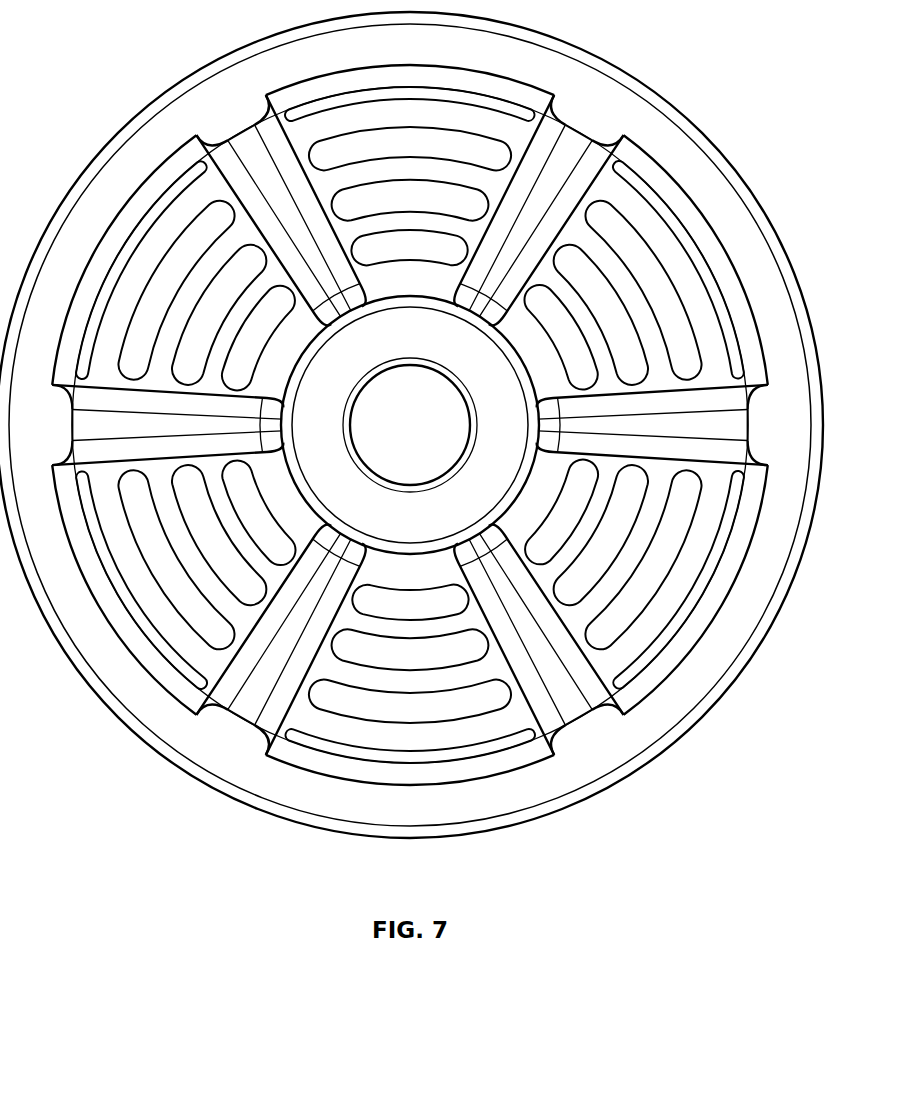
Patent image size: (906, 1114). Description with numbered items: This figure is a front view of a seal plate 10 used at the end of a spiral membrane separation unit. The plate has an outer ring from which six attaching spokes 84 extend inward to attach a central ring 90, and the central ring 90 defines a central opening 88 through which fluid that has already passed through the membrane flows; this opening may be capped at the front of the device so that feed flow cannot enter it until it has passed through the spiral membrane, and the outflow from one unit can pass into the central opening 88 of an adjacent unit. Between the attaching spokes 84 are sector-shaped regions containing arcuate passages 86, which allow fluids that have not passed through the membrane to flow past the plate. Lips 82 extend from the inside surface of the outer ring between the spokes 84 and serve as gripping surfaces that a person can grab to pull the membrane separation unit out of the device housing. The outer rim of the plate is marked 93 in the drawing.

The seal plate 10 is at (112, 57).
The lip 82 is at (325, 762).
The attaching spoke 84 is at (255, 692).
The passage 86 is at (391, 665).
The central opening 88 is at (426, 434).
The central ring 90 is at (494, 491).
The outer rim 93 is at (78, 274).